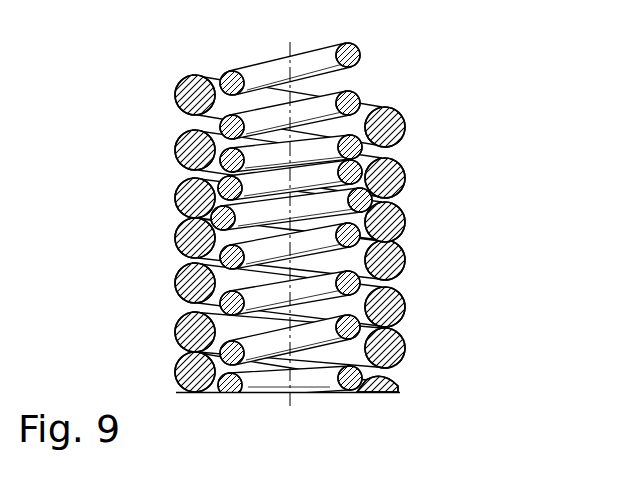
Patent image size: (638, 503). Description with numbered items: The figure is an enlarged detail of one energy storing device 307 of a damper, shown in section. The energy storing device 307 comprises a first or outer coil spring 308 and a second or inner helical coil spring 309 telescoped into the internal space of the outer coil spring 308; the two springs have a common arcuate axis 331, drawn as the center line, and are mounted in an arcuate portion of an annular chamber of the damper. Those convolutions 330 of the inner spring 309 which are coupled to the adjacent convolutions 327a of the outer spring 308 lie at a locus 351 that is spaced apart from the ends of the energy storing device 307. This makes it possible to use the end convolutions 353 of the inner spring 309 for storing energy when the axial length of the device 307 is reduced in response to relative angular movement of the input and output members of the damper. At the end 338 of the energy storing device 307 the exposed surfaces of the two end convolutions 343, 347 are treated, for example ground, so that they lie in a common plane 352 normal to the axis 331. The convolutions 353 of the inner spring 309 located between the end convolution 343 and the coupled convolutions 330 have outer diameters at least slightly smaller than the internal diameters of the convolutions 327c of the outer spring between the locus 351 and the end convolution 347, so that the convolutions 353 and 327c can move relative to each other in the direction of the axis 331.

The energy storing device 307 is at (152, 295).
The outer coil spring 308 is at (397, 127).
The inner helical coil spring 309 is at (360, 55).
The convolutions of the outer spring 327a is at (400, 222).
The convolutions of the outer spring 327c is at (395, 293).
The convolutions of the inner spring 330 is at (400, 185).
The common arcuate axis 331 is at (290, 52).
The end of the energy storing device 338 is at (258, 393).
The end convolution of the inner spring 343 is at (390, 375).
The end convolution of the outer spring 347 is at (387, 392).
The locus 351 is at (163, 187).
The common plane 352 is at (307, 393).
The end convolutions of the inner spring 353 is at (390, 315).